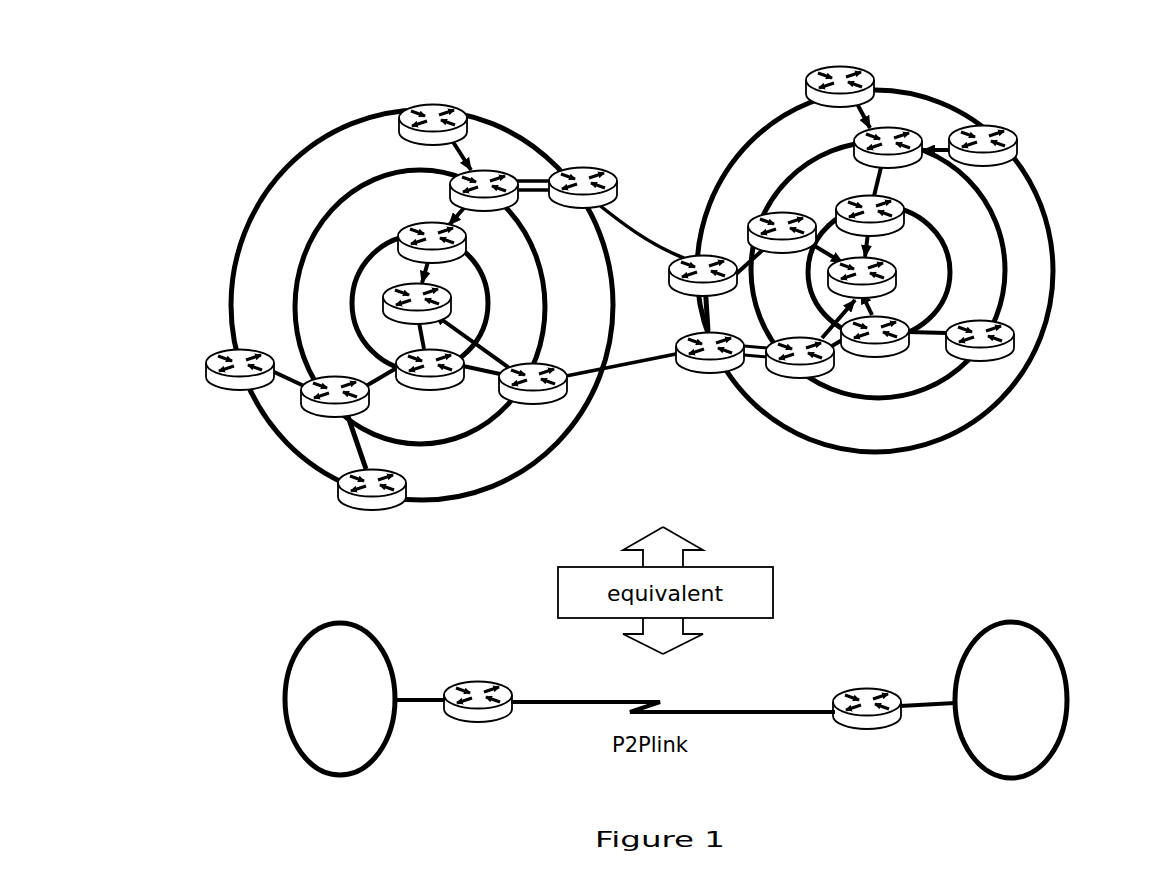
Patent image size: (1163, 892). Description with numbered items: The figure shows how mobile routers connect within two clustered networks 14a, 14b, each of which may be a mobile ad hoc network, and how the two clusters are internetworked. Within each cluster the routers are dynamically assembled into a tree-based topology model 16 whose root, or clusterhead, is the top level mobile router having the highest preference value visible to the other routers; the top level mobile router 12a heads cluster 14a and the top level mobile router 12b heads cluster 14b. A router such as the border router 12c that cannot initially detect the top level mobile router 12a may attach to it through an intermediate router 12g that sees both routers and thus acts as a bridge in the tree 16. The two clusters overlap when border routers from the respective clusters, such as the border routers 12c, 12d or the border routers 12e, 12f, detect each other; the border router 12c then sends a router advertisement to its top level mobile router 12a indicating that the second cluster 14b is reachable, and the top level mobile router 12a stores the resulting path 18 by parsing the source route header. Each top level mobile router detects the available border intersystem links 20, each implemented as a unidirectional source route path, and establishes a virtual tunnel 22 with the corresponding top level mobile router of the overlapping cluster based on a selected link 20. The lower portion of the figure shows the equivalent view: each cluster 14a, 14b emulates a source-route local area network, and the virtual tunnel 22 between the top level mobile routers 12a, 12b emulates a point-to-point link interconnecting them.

The top level mobile router 12a is at (850, 257).
The top level mobile router 12b is at (382, 292).
The border router 12c is at (698, 258).
The border router 12d is at (593, 171).
The border router 12e is at (704, 370).
The border router 12f is at (546, 404).
The intermediate router 12g is at (773, 218).
The clustered network 14a is at (983, 434).
The clustered network 14b is at (243, 424).
The tree-based topology model 16 is at (328, 433).
The path 18 is at (768, 287).
The border intersystem link 20 is at (641, 236).
The virtual tunnel 22 is at (576, 707).